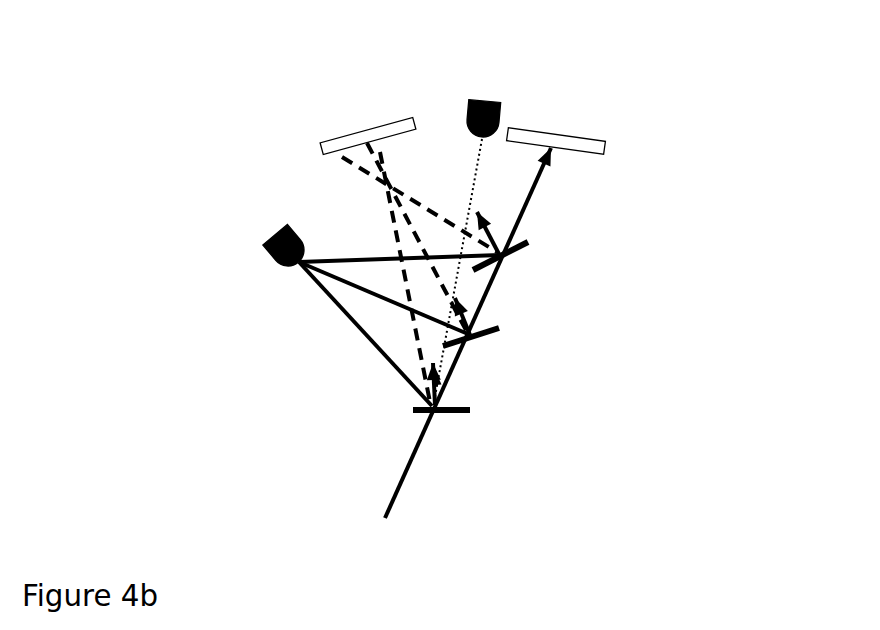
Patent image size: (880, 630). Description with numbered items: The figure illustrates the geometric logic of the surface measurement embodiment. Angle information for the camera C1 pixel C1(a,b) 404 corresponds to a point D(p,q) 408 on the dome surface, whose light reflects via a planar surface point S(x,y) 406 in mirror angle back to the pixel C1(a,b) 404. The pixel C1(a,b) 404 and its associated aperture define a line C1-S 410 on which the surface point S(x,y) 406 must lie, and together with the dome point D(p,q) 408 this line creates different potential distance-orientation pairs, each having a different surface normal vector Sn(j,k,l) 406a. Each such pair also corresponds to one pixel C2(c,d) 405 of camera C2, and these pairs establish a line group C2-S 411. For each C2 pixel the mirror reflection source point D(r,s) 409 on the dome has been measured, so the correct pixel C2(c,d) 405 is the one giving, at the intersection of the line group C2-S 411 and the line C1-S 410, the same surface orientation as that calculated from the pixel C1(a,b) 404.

The camera C1 pixel C1(a,b) 404 is at (561, 127).
The camera C2 pixel C2(c,d) 405 is at (378, 120).
The surface point S(x,y) 406 is at (423, 414).
The surface normal vector Sn(j,k,l) 406a is at (468, 305).
The dome point D(p,q) 408 is at (241, 264).
The dome point D(r,s) 409 is at (496, 81).
The line C1-S 410 is at (397, 498).
The line group C2-S 411 is at (392, 195).